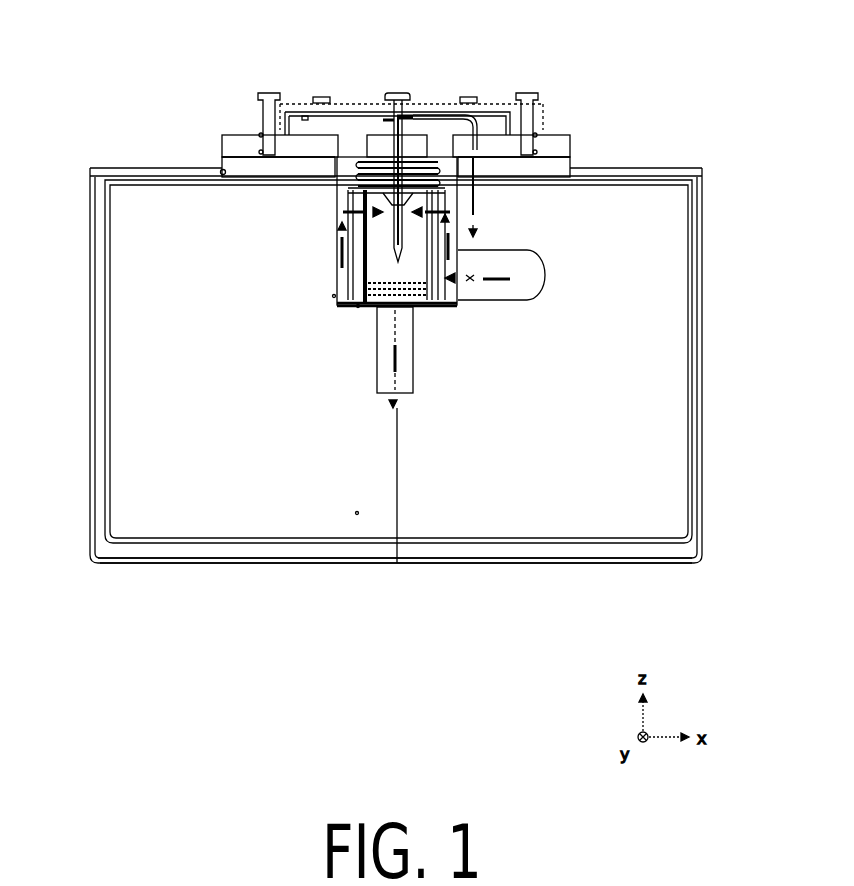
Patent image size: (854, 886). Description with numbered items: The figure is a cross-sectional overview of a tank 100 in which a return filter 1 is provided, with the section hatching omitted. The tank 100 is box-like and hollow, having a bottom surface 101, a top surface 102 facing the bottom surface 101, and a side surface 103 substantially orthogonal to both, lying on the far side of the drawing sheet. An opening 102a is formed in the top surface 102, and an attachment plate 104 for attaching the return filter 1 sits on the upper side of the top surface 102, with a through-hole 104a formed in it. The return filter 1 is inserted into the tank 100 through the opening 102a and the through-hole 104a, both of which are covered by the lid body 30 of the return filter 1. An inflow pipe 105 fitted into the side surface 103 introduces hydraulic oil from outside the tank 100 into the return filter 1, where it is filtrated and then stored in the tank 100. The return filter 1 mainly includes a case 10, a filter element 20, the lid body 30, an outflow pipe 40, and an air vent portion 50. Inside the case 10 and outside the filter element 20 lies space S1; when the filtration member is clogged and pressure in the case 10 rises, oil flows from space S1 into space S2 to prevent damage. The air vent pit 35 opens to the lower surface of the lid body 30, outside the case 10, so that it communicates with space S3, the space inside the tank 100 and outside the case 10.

The return filter 1 is at (572, 44).
The case 10 is at (460, 195).
The filter element 20 is at (470, 124).
The lid body 30 is at (413, 98).
The air vent pit 35 is at (460, 150).
The outflow pipe 40 is at (356, 160).
The air vent portion 50 is at (383, 121).
The tank 100 is at (612, 567).
The bottom surface 101 is at (465, 543).
The top surface 102 is at (647, 168).
The opening 102a is at (223, 177).
The side surface 103 is at (677, 342).
The attachment plate 104 is at (247, 162).
The through-hole 104a is at (286, 168).
The inflow pipe 105 is at (520, 262).
The space S1 is at (334, 296).
The space S2 is at (358, 306).
The space S3 is at (357, 513).